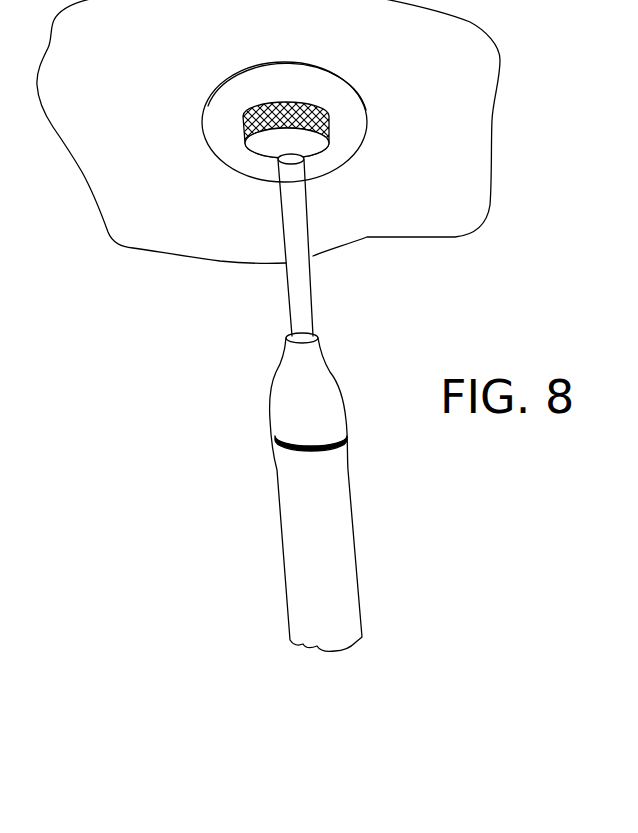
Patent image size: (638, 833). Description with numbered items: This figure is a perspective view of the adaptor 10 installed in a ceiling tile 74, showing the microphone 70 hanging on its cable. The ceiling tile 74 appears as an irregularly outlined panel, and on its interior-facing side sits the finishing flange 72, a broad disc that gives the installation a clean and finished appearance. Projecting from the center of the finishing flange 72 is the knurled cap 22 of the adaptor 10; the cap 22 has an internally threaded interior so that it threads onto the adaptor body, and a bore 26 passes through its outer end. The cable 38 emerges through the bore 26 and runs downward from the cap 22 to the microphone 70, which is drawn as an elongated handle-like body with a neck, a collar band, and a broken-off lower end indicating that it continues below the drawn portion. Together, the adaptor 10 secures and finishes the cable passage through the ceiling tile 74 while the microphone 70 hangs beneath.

The adaptor 10 is at (292, 356).
The cap 22 is at (262, 158).
The bore 26 is at (278, 172).
The shaft 38 is at (303, 277).
The microphone 70 is at (345, 560).
The finishing flange 72 is at (231, 107).
The ceiling tile 74 is at (429, 78).